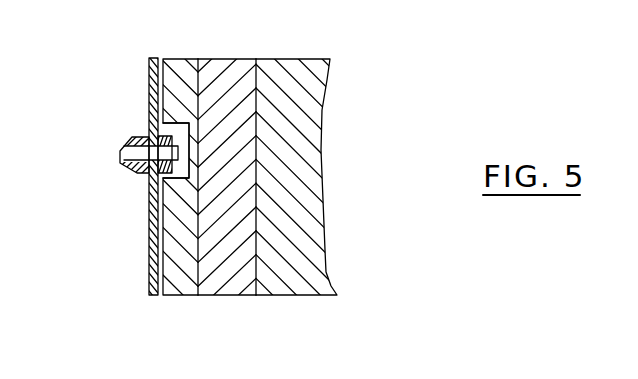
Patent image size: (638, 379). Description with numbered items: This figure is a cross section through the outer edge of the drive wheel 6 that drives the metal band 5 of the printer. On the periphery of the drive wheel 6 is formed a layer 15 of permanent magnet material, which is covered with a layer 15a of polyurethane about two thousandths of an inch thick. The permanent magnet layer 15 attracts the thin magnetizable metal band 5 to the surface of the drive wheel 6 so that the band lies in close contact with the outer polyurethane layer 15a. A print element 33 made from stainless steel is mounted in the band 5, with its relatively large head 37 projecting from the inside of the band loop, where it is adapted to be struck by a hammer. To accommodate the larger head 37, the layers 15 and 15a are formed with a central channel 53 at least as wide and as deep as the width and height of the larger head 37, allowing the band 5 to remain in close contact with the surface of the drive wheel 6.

The metal band 5 is at (150, 90).
The drive wheel 6 is at (313, 82).
The layer of permanent magnet material 15 is at (238, 68).
The layer of polyurethane 15a is at (182, 72).
The print element 33 is at (158, 159).
The larger head 37 is at (176, 141).
The central channel 53 is at (185, 171).